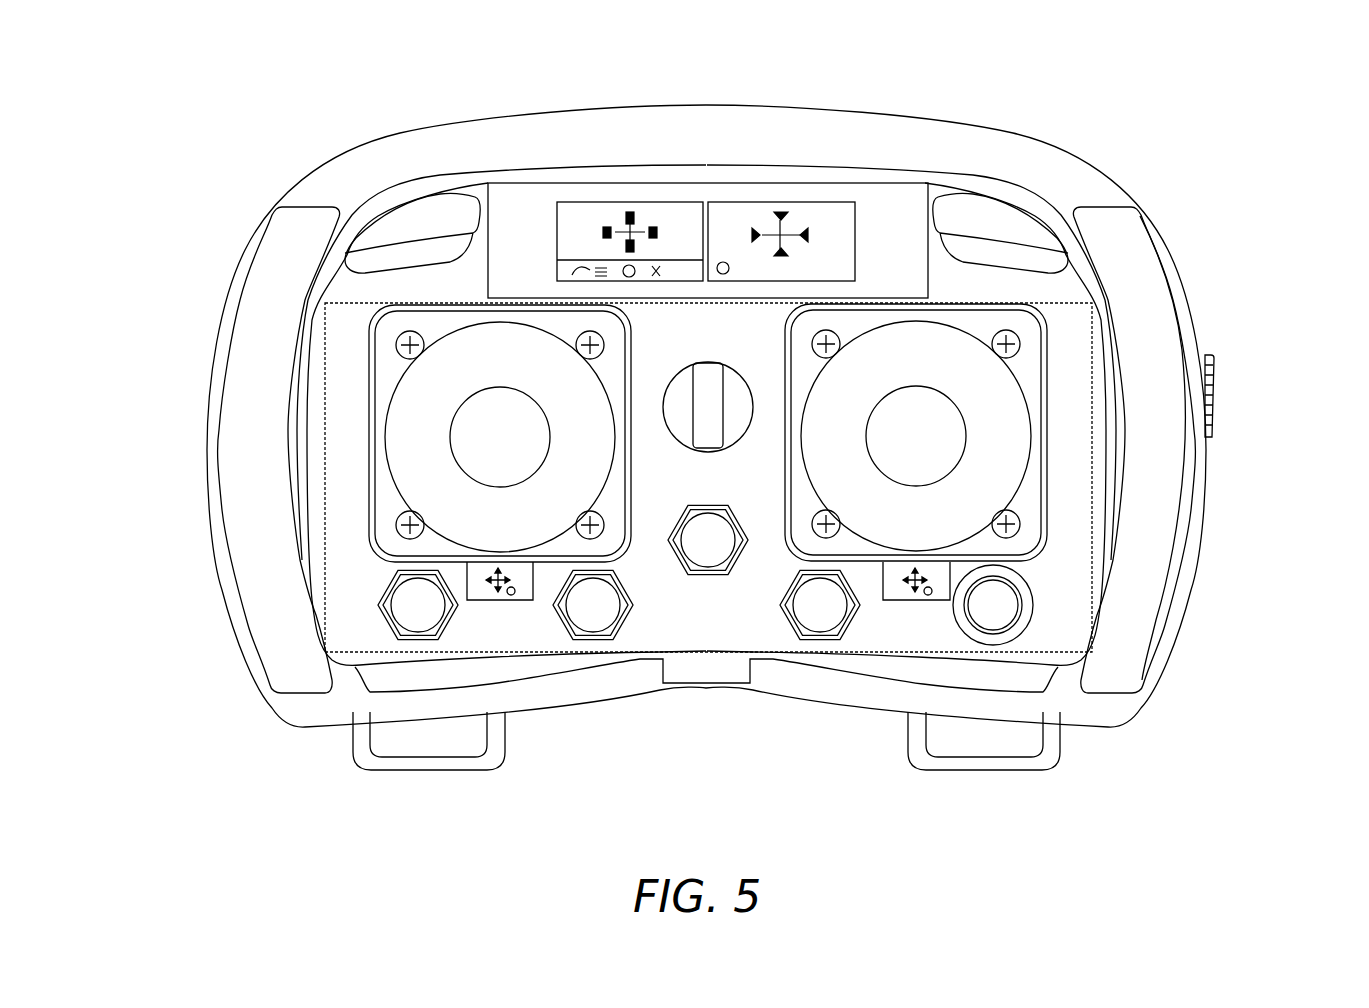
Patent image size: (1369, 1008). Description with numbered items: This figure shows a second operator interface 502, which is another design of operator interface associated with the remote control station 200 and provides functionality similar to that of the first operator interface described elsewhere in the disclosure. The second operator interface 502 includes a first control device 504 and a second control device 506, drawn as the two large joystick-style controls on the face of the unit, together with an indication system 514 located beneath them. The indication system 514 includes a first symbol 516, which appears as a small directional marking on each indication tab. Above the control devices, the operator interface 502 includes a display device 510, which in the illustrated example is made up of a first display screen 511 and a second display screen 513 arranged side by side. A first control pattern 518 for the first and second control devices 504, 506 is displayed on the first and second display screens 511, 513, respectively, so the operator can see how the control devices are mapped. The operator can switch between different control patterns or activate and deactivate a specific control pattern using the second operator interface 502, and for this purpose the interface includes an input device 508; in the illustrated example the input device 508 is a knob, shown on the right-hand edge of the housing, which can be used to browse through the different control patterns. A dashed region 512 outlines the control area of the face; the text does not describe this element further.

The remote control station 200 is at (706, 422).
The second operator interface 502 is at (211, 253).
The first control device 504 is at (477, 457).
The second control device 506 is at (955, 453).
The input device 508 is at (1215, 371).
The display device 510 is at (708, 155).
The first display screen 511 is at (680, 215).
The control panel 512 is at (1077, 347).
The second display screen 513 is at (799, 148).
The indication system 514 is at (503, 605).
The first symbol 516 is at (490, 583).
The first control pattern 518 is at (816, 202).